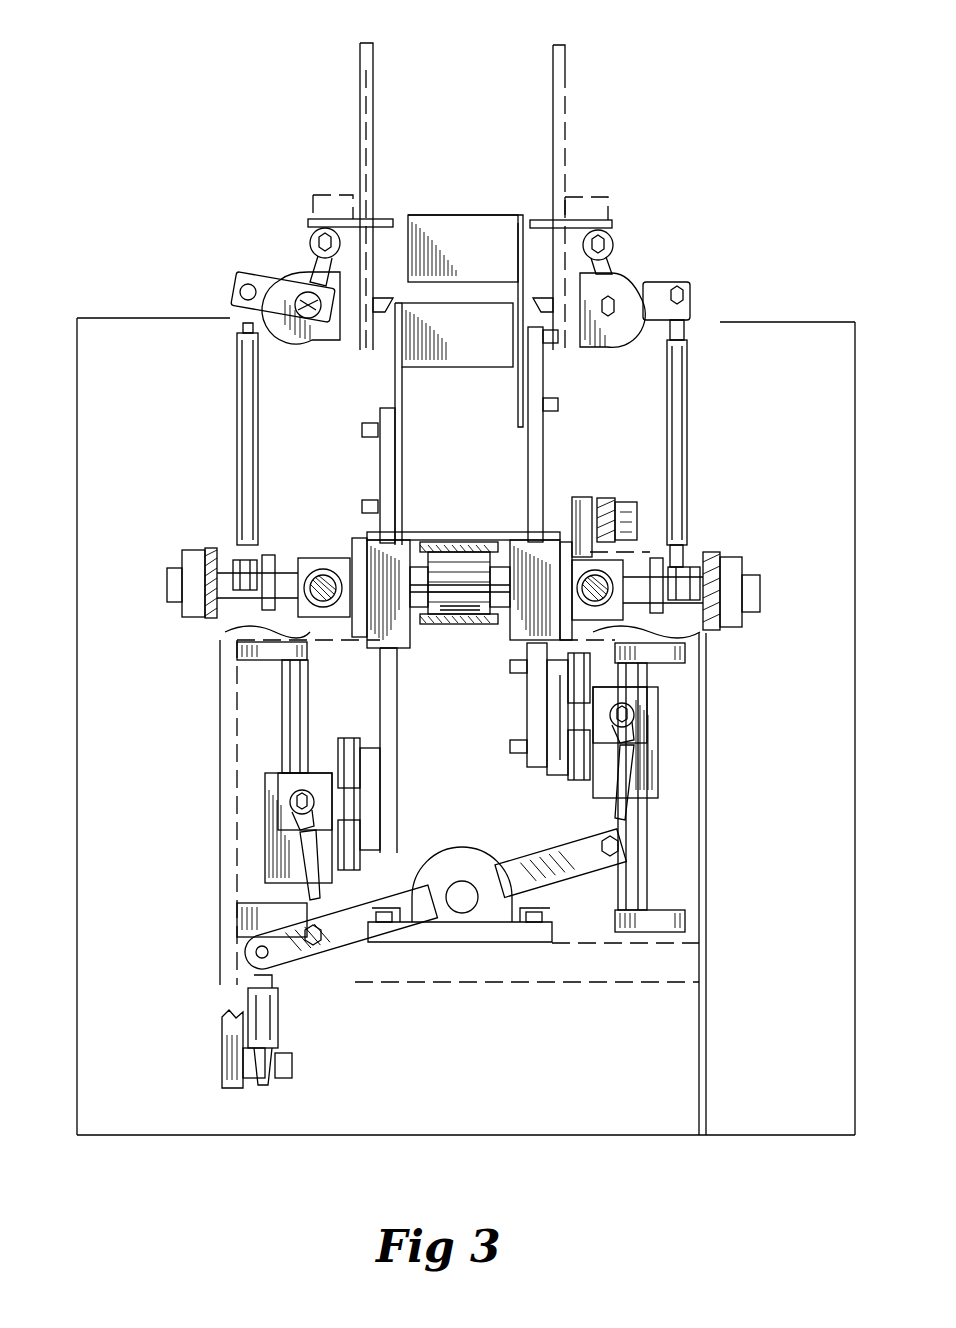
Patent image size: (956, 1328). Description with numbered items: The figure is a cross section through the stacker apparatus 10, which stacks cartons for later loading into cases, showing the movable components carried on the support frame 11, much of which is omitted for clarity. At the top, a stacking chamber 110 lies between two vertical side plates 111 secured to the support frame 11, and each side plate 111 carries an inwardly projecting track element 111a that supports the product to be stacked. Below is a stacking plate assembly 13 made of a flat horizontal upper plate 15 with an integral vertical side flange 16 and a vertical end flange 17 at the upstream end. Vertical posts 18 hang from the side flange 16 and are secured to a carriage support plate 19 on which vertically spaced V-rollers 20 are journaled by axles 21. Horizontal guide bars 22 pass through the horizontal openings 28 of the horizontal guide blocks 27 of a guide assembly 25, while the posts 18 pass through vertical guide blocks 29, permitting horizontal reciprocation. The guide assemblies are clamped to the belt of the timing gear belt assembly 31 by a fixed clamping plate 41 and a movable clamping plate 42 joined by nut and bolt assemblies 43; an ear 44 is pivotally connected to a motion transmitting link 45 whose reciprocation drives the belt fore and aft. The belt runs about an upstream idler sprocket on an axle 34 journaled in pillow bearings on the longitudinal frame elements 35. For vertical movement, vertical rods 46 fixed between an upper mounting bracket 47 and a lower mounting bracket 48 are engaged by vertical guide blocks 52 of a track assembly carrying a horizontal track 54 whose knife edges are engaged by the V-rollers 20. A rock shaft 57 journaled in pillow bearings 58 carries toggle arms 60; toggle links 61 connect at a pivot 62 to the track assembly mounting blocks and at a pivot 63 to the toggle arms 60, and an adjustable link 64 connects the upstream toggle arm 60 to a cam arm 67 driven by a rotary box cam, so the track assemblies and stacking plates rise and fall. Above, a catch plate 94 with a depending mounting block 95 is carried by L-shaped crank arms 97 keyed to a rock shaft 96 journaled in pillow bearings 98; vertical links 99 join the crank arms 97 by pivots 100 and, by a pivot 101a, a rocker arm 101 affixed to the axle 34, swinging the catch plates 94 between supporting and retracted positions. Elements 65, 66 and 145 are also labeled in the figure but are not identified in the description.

The stacker apparatus 10 is at (133, 160).
The support frame 11 is at (92, 302).
The stacking plate assembly 13 is at (474, 200).
The upper plate 15 is at (430, 230).
The vertical side flange 16 is at (518, 398).
The vertical end flange 17 is at (495, 245).
The vertical posts 18 is at (380, 460).
The carriage support plate 19 is at (538, 768).
The V-rollers 20 is at (360, 728).
The axles 21 is at (640, 680).
The guide bars 22 is at (300, 605).
The guide assembly 25 is at (350, 660).
The horizontal guide blocks 27 is at (312, 558).
The horizontal opening 28 is at (323, 570).
The vertical guide blocks 29 is at (520, 540).
The timing gear belt assembly 31 is at (468, 664).
The axle 34 is at (167, 585).
The longitudinal frame elements 35 is at (210, 610).
The fixed clamping plate 41 is at (432, 540).
The movable clamping plate 42 is at (455, 572).
The nut and bolt assemblies 43 is at (498, 540).
The ear 44 is at (582, 497).
The motion transmitting link 45 is at (625, 488).
The vertical rods 46 is at (282, 725).
The upper mounting bracket 47 is at (255, 660).
The lower mounting bracket 48 is at (245, 905).
The vertical guide blocks 52 is at (265, 855).
The horizontal track 54 is at (530, 712).
The rock shaft 57 is at (462, 897).
The pillow bearings 58 is at (465, 848).
The toggle arms 60 is at (575, 845).
The toggle links 61 is at (300, 850).
The pivot 62 is at (290, 800).
The pivot 63 is at (313, 945).
The adjustable link 64 is at (278, 1010).
The lever arm 65 is at (245, 943).
The nut 66 is at (292, 1062).
The cam arm 67 is at (222, 1028).
The catch plates 94 is at (385, 219).
The mounting block 95 is at (310, 240).
The rock shaft 96 is at (305, 318).
The crank arms 97 is at (300, 275).
The pillow bearings 98 is at (305, 340).
The links 99 is at (237, 378).
The pivots 100 is at (240, 283).
The rocker arm 101 is at (268, 555).
The pivot 101a is at (240, 560).
The stacking chamber 110 is at (475, 82).
The side plates 111 is at (360, 52).
The track element 111a is at (380, 312).
The direction arrow 145 is at (378, 405).